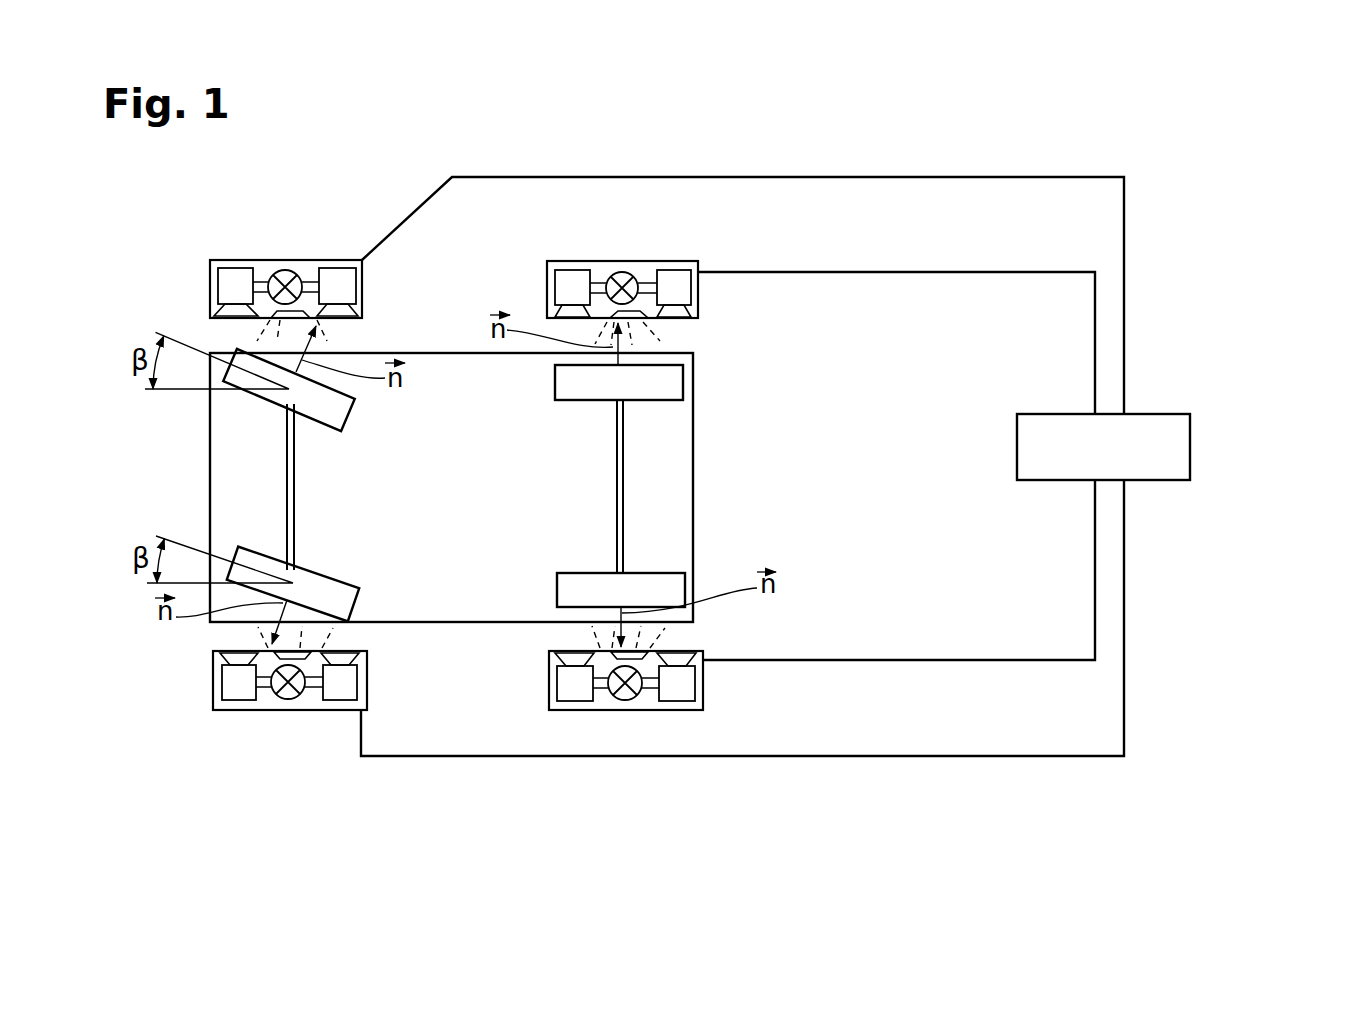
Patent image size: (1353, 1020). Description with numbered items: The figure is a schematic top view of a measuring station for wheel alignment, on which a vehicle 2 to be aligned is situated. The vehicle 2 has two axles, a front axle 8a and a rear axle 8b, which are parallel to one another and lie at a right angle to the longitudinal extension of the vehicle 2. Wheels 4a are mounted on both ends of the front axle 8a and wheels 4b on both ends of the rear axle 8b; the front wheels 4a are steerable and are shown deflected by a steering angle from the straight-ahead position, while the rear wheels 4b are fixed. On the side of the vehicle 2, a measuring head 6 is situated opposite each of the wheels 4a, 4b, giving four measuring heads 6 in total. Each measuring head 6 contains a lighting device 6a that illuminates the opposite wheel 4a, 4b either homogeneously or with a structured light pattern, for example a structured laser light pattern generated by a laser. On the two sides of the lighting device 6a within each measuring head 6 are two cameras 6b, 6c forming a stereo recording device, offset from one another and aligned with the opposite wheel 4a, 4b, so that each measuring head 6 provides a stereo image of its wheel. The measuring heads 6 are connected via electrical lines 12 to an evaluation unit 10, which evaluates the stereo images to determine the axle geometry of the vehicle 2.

The vehicle 2 is at (693, 508).
The front wheel 4a is at (333, 412).
The rear wheel 4b is at (566, 382).
The measuring head 6 is at (330, 260).
The lighting device 6a is at (285, 276).
The camera 6b is at (233, 276).
The camera 6c is at (350, 288).
The front axle 8a is at (293, 497).
The rear axle 8b is at (618, 498).
The evaluation unit 10 is at (1180, 448).
The electrical line 12 is at (1093, 328).